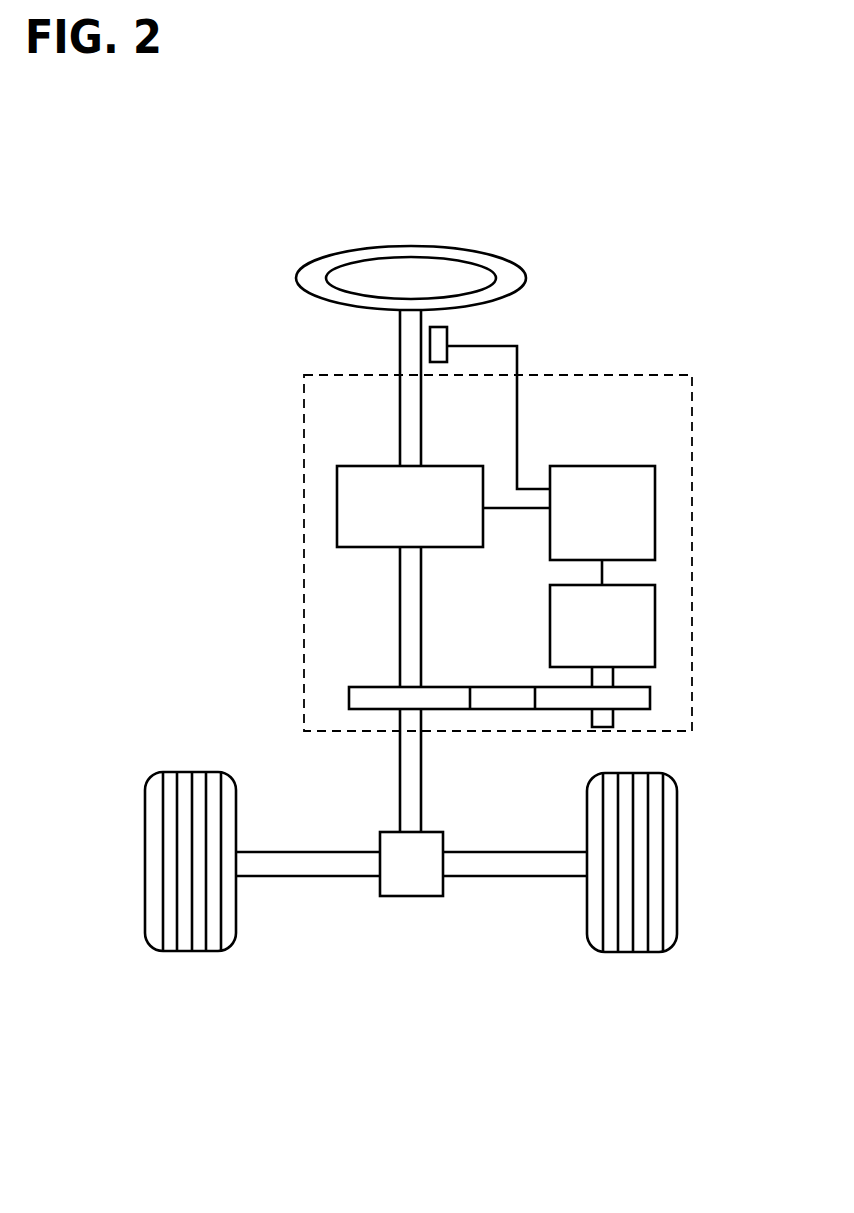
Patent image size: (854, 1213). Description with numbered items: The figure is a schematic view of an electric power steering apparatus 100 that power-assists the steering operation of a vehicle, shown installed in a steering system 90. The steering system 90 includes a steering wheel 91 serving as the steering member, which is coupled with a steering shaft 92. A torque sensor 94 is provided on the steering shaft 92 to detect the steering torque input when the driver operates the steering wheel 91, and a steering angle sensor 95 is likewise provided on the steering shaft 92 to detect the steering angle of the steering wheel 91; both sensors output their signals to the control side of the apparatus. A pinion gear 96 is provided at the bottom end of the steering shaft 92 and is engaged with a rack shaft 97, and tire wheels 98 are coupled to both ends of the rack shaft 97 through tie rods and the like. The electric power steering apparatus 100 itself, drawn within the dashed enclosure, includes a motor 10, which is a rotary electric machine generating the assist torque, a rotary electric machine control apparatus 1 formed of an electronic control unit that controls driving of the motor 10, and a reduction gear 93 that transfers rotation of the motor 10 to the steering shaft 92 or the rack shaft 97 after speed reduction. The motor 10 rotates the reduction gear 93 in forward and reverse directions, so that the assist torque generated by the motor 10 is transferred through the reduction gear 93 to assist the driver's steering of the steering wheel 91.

The rotary electric machine control apparatus 1 is at (655, 484).
The motor 10 is at (655, 615).
The steering system 90 is at (363, 996).
The steering wheel 91 is at (296, 280).
The steering shaft 92 is at (400, 348).
The reduction gear 93 is at (651, 697).
The torque sensor 94 is at (337, 518).
The steering angle sensor 95 is at (449, 330).
The pinion gear 96 is at (401, 896).
The rack shaft 97 is at (300, 876).
The tire wheels 98 is at (207, 951).
The electric power steering apparatus 100 is at (613, 375).